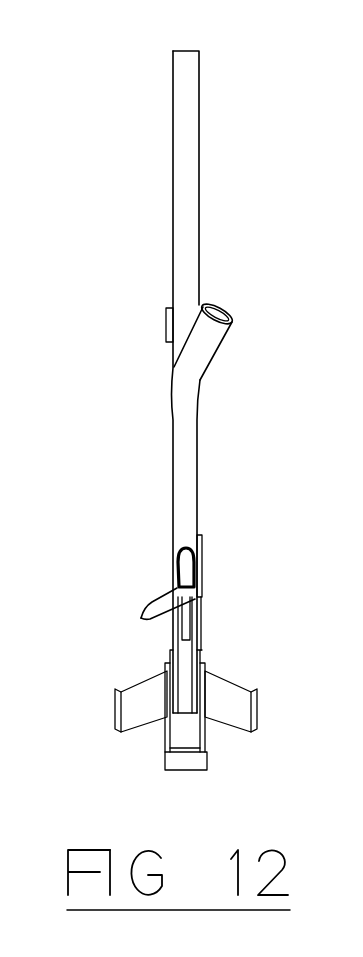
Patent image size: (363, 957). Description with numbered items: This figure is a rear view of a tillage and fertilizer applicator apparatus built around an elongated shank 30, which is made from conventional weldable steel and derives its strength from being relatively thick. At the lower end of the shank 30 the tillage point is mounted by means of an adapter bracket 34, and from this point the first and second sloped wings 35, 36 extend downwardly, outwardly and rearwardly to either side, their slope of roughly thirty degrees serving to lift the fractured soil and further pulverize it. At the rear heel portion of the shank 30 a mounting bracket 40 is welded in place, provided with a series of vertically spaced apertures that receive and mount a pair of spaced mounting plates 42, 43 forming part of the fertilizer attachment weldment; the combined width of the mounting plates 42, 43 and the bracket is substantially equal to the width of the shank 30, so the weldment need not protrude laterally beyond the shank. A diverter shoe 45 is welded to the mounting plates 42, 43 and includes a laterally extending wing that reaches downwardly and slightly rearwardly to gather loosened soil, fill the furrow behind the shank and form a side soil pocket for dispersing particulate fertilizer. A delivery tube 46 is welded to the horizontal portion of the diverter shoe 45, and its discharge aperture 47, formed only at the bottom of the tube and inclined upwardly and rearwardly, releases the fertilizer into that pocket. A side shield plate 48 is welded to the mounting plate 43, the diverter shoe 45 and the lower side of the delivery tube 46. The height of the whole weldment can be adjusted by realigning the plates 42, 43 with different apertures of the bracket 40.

The shank 30 is at (199, 154).
The mounting bracket 40 is at (166, 322).
The delivery tube 46 is at (203, 353).
The discharge aperture 47 is at (176, 562).
The side shield plate 48 is at (202, 580).
The diverter shoe 45 is at (143, 617).
The mounting plate 42 is at (172, 638).
The mounting plate 43 is at (202, 635).
The first sloped wing 35 is at (113, 707).
The second sloped wing 36 is at (258, 708).
The adapter bracket 34 is at (165, 752).